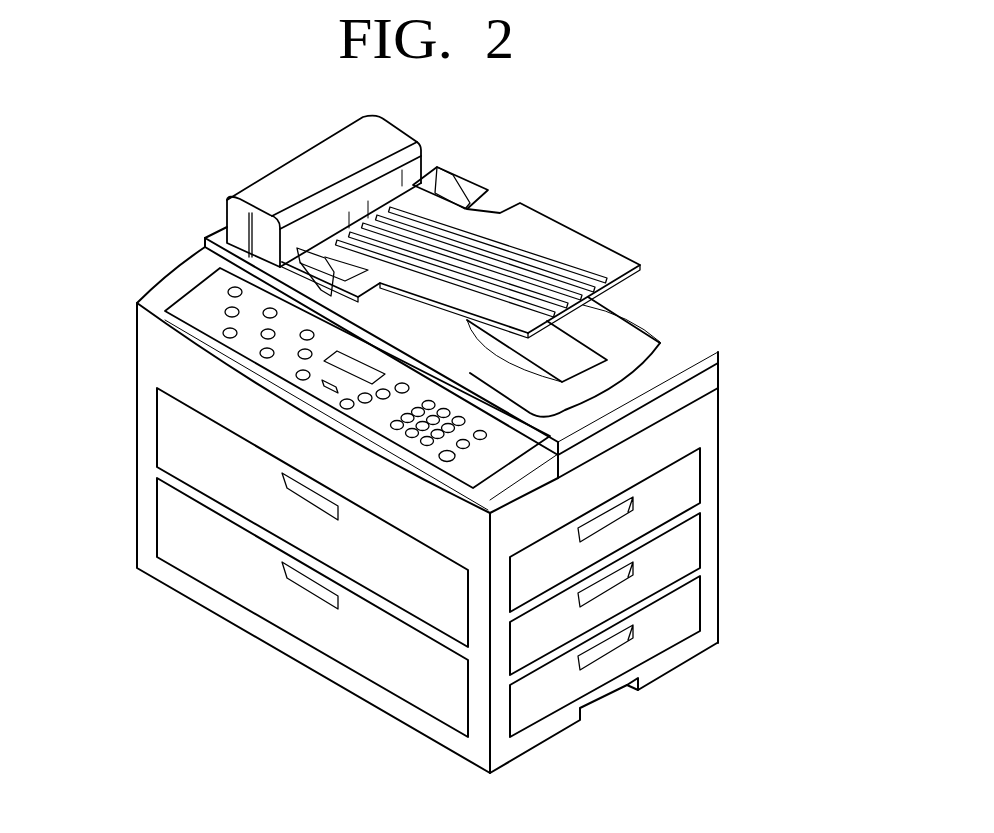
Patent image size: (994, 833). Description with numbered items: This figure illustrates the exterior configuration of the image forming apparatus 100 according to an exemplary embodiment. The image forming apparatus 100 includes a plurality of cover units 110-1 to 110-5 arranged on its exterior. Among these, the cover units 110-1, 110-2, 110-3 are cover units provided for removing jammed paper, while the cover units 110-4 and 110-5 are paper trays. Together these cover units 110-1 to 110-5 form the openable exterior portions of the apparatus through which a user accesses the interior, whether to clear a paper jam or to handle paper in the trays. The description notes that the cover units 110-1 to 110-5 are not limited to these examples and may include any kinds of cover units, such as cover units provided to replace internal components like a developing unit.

The image forming apparatus 100 is at (599, 171).
The cover unit 110-1 is at (692, 478).
The cover unit 110-2 is at (692, 543).
The cover unit 110-3 is at (692, 608).
The paper tray 110-4 is at (167, 433).
The paper tray 110-5 is at (167, 522).